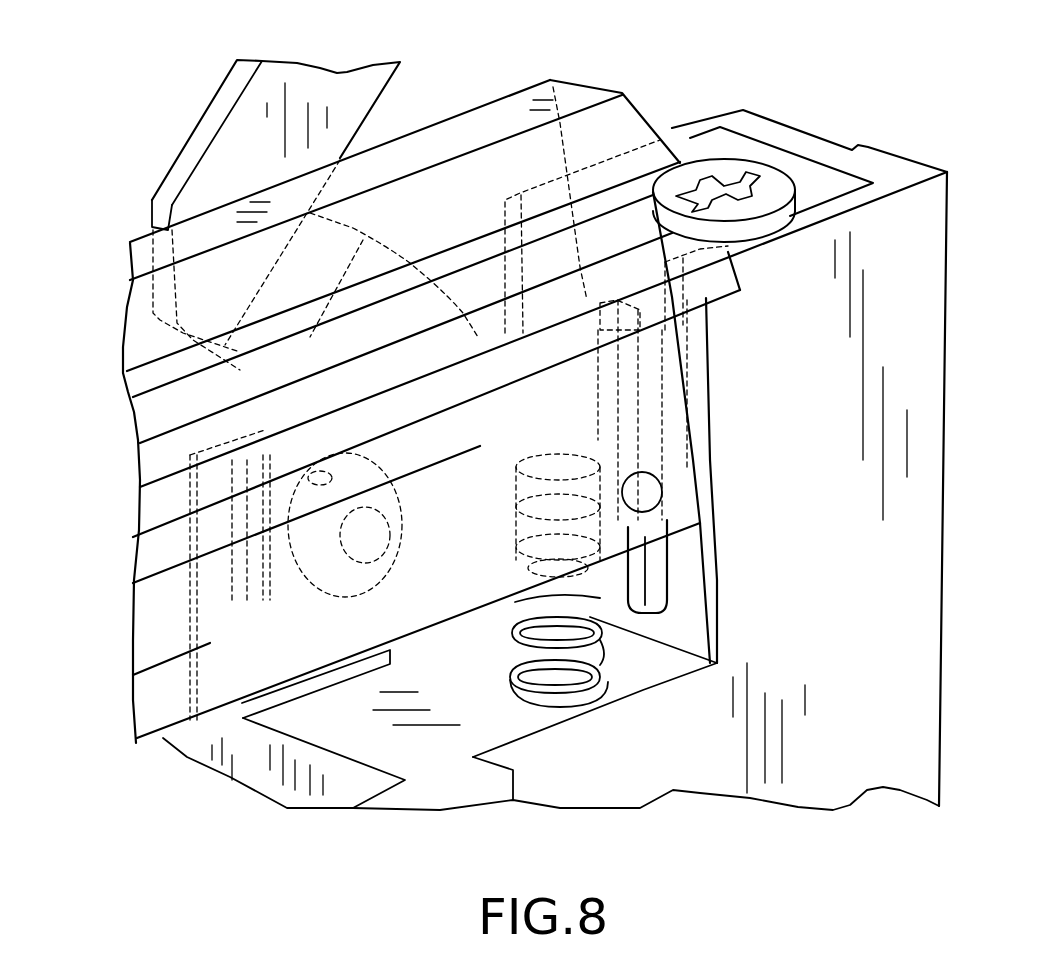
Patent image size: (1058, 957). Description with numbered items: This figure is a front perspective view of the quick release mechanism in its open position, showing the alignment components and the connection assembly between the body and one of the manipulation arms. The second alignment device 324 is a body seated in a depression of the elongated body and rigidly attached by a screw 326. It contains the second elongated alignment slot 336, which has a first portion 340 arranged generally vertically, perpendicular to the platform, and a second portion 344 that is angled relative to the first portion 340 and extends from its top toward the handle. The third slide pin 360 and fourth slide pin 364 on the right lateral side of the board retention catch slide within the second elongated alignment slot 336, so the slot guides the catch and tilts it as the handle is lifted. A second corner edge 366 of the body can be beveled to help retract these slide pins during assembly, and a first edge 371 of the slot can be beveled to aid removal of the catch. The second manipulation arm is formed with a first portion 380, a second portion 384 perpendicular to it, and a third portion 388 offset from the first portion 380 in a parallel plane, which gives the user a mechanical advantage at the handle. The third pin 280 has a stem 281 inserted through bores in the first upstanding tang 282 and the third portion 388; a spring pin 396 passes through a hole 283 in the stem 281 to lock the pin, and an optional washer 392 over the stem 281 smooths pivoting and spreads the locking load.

The third pin 280 is at (240, 425).
The stem 281 is at (337, 538).
The first upstanding tang 282 is at (133, 673).
The hole 283 is at (337, 508).
The second alignment device 324 is at (830, 178).
The screw 326 is at (753, 173).
The second elongated alignment slot 336 is at (667, 587).
The first portion 340 is at (660, 558).
The second portion 344 is at (647, 392).
The third slide pin 360 is at (650, 495).
The fourth slide pin 364 is at (632, 352).
The second corner edge 366 is at (657, 577).
The first edge 371 is at (697, 409).
The first portion 380 is at (380, 80).
The second portion 384 is at (347, 223).
The third portion 388 is at (452, 304).
The washer 392 is at (280, 522).
The spring pin 396 is at (313, 480).